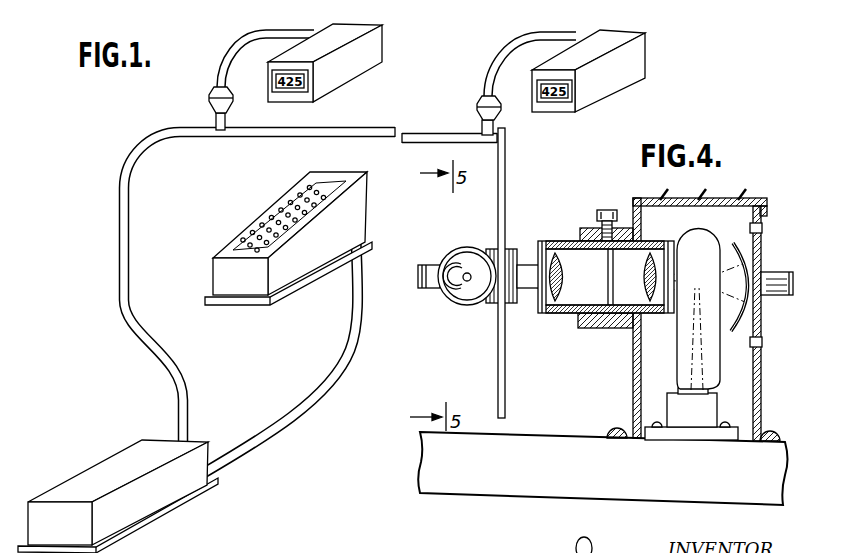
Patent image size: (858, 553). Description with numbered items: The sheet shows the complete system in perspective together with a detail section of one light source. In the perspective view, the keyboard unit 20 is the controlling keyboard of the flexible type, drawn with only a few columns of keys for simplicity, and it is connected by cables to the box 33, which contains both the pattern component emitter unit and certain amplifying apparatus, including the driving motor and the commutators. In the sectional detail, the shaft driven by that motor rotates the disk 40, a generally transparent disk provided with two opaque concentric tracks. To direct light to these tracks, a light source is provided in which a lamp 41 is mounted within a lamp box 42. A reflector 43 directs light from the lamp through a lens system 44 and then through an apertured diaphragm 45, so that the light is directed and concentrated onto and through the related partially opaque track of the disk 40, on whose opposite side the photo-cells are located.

In FIG. 1, the keyboard unit 20 is at (297, 253).
In FIG. 1, the box 33 is at (87, 483).
In FIG. 4, the disk 40 is at (498, 358).
In FIG. 4, the lamp 41 is at (710, 338).
In FIG. 4, the lamp box 42 is at (758, 392).
In FIG. 4, the reflector 43 is at (735, 246).
In FIG. 4, the lens system 44 is at (606, 286).
In FIG. 4, the apertured diaphragm 45 is at (606, 290).